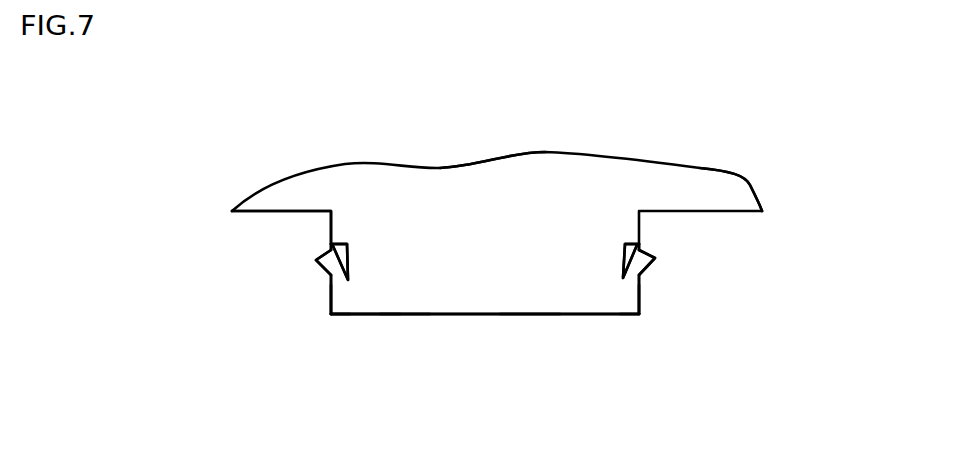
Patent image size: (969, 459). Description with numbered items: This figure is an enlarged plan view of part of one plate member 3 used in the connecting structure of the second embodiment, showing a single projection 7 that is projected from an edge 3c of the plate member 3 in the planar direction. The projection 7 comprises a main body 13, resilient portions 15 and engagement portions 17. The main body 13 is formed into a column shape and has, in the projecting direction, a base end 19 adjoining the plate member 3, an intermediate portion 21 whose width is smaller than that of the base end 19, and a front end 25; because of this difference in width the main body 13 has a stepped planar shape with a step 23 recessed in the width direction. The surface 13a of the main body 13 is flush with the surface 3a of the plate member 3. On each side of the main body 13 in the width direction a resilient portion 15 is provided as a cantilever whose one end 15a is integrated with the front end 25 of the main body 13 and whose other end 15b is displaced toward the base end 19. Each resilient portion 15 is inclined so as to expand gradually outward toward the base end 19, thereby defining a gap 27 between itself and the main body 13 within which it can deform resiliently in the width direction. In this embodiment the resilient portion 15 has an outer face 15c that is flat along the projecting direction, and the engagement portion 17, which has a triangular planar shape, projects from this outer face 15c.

The plate member 3 is at (557, 155).
The surface of plate member 3a is at (497, 170).
The edge of plate member 3c is at (740, 212).
The projection 7 is at (437, 318).
The main body 13 is at (495, 287).
The surface of main body 13a is at (524, 300).
The resilient portion 15 is at (331, 278).
The one end of resilient portion 15a is at (340, 314).
The other end of resilient portion 15b is at (331, 244).
The outer face of resilient portion 15c is at (331, 288).
The engagement portion 17 is at (317, 259).
The base end 19 is at (331, 234).
The intermediate portion 21 is at (372, 262).
The step 23 is at (356, 252).
The front end 25 is at (403, 317).
The gap 27 is at (337, 252).